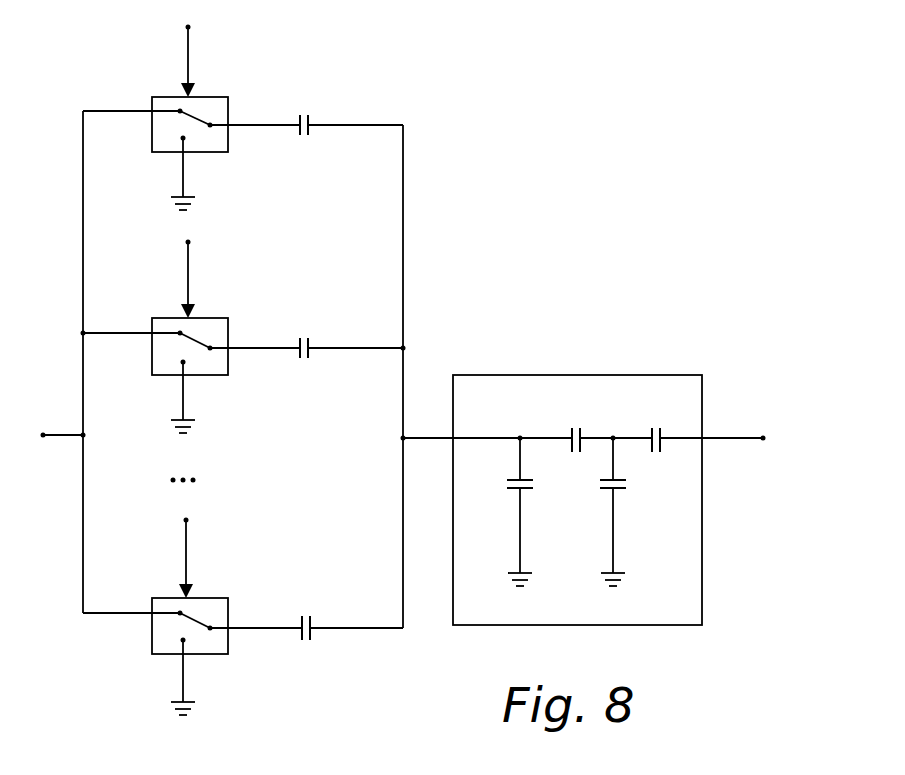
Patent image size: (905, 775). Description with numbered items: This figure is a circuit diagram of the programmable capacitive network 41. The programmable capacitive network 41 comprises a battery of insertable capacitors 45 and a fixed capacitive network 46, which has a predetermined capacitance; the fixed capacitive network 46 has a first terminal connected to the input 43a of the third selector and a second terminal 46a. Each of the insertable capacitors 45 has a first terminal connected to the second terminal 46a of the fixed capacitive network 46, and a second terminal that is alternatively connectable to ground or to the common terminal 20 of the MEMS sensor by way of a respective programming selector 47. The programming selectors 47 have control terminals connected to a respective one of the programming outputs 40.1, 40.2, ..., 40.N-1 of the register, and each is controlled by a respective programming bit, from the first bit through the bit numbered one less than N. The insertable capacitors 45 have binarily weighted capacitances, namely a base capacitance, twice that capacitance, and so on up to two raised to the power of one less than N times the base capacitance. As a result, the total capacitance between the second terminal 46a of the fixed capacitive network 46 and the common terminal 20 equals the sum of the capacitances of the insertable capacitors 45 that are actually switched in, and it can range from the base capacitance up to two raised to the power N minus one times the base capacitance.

The common terminal 20 is at (43, 435).
The programmable capacitive network 41 is at (633, 257).
The programming output 40.1 is at (188, 27).
The programming output 40.2 is at (188, 242).
The programming output 40.N-1 is at (186, 520).
The programming selector 47 is at (217, 147).
The insertable capacitor 45 is at (310, 133).
The fixed capacitive network 46 is at (647, 402).
The second terminal 46a is at (403, 438).
The input 43a is at (763, 438).